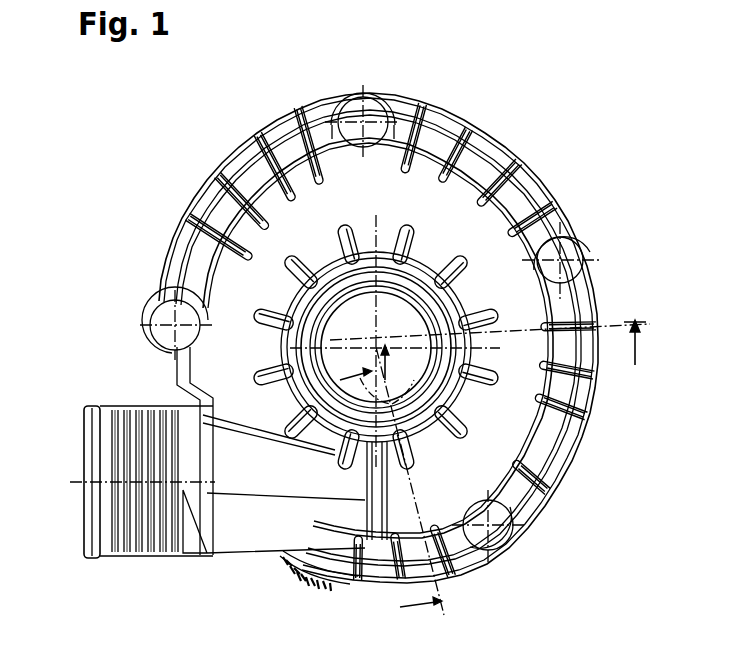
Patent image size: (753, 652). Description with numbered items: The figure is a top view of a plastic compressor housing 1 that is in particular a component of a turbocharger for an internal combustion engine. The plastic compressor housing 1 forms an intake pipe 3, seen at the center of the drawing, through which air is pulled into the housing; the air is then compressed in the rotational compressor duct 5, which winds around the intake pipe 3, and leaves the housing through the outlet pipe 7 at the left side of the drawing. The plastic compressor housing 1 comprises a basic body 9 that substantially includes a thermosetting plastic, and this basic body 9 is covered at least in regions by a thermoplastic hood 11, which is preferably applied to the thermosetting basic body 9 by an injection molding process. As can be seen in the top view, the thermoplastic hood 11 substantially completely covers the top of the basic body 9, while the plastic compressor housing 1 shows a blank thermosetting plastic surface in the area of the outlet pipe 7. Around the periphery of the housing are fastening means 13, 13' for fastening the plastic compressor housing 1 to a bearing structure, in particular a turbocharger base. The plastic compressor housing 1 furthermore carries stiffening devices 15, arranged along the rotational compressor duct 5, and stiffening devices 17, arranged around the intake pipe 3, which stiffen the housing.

The plastic compressor housing 1 is at (165, 212).
The intake pipe 3 is at (353, 331).
The rotational compressor duct 5 is at (480, 232).
The outlet pipe 7 is at (90, 505).
The basic body 9 is at (114, 425).
The thermoplastic hood 11 is at (422, 190).
The fastening means 13 is at (370, 316).
The fastening means 13' is at (319, 594).
The stiffening devices 15 is at (232, 159).
The stiffening devices 17 is at (310, 240).